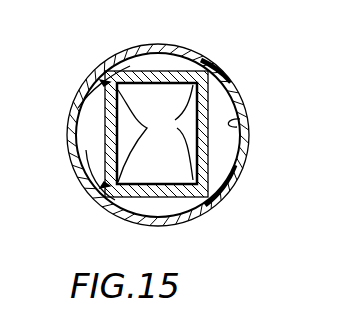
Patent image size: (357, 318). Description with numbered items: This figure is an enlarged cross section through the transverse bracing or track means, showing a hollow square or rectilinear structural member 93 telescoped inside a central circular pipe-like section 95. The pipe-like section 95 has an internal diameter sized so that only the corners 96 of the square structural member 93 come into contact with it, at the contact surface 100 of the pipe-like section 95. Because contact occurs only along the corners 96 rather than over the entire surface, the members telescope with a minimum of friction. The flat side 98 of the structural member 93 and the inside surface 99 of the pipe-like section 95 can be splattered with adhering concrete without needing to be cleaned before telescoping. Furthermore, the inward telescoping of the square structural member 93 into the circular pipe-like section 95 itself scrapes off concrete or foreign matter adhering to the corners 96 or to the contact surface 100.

The structural member 93 is at (210, 115).
The pipe-like section 95 is at (243, 145).
The corners 96 is at (155, 133).
The flat side 98 is at (165, 72).
The inside surface 99 is at (240, 119).
The contact surface 100 is at (102, 80).